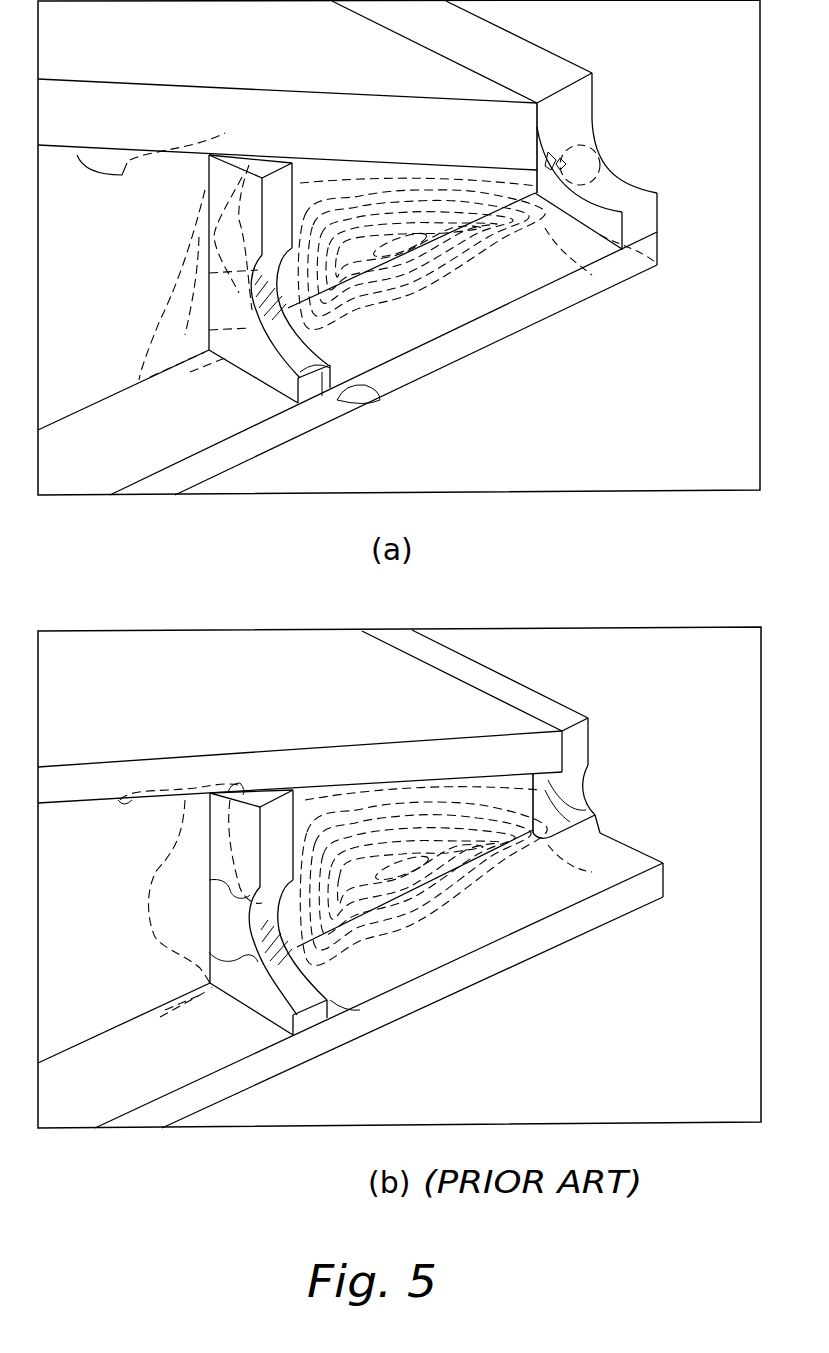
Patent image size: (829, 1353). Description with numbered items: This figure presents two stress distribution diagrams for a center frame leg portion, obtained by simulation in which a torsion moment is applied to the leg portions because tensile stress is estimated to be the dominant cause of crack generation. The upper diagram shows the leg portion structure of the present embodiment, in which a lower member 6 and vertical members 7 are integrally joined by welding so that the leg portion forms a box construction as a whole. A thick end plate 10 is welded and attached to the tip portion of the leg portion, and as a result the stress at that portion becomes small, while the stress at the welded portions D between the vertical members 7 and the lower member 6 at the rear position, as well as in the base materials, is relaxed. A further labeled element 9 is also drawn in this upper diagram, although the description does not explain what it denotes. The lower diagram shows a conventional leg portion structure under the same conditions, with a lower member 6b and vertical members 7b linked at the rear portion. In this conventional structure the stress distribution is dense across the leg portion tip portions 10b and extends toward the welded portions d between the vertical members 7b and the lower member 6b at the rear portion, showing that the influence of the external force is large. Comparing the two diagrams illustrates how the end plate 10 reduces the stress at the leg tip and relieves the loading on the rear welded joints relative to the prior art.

The lower member 6 is at (462, 343).
The vertical members 7 is at (362, 190).
The post / insert block with filleted surface 9 is at (243, 190).
The thick end plate 10 is at (578, 109).
The welded portions D is at (463, 238).
The lower member 6b is at (430, 958).
The vertical members 7b is at (314, 800).
The leg portion tip portions 10b is at (588, 745).
The welded portions d is at (477, 865).